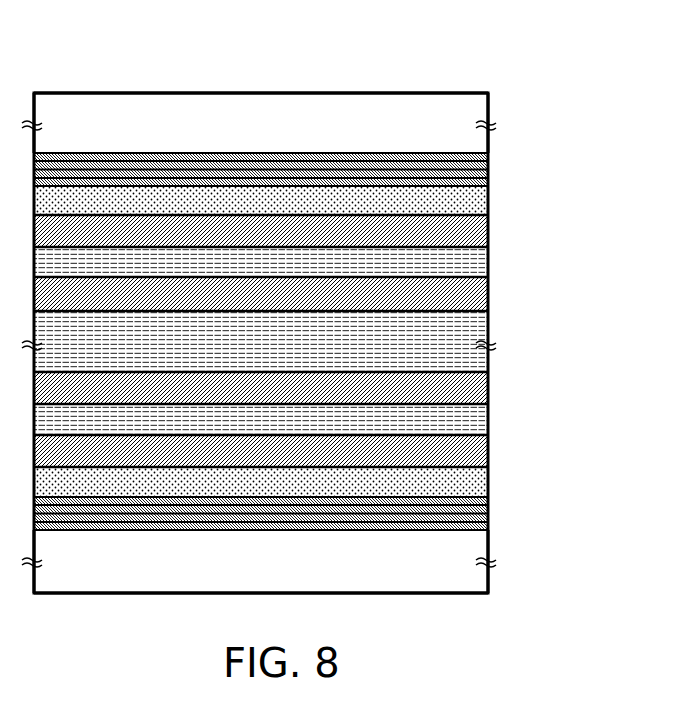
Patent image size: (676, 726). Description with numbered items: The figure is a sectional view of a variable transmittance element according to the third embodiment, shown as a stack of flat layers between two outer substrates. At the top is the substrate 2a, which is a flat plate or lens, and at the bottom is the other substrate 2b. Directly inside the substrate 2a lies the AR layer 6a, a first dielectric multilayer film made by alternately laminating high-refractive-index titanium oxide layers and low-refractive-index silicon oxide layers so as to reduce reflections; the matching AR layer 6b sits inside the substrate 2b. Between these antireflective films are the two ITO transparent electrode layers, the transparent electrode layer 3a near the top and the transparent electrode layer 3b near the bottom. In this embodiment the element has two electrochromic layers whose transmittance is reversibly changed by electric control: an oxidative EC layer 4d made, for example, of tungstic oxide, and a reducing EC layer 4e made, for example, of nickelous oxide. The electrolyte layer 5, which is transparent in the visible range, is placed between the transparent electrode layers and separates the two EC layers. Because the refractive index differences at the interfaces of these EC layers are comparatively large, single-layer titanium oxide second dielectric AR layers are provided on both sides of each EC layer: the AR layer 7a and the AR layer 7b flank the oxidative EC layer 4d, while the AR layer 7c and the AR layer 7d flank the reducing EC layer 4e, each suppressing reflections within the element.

The substrate 2a is at (450, 127).
The AR layer 6a is at (497, 153).
The transparent electrode layer 3a is at (450, 200).
The AR layer 7a is at (450, 232).
The oxidative EC layer 4d is at (450, 262).
The AR layer 7b is at (450, 292).
The electrolyte layer 5 is at (450, 358).
The AR layer 7c is at (450, 387).
The reducing EC layer 4e is at (450, 420).
The AR layer 7d is at (450, 450).
The transparent electrode layer 3b is at (450, 482).
The AR layer 6b is at (497, 498).
The substrate 2b is at (450, 580).